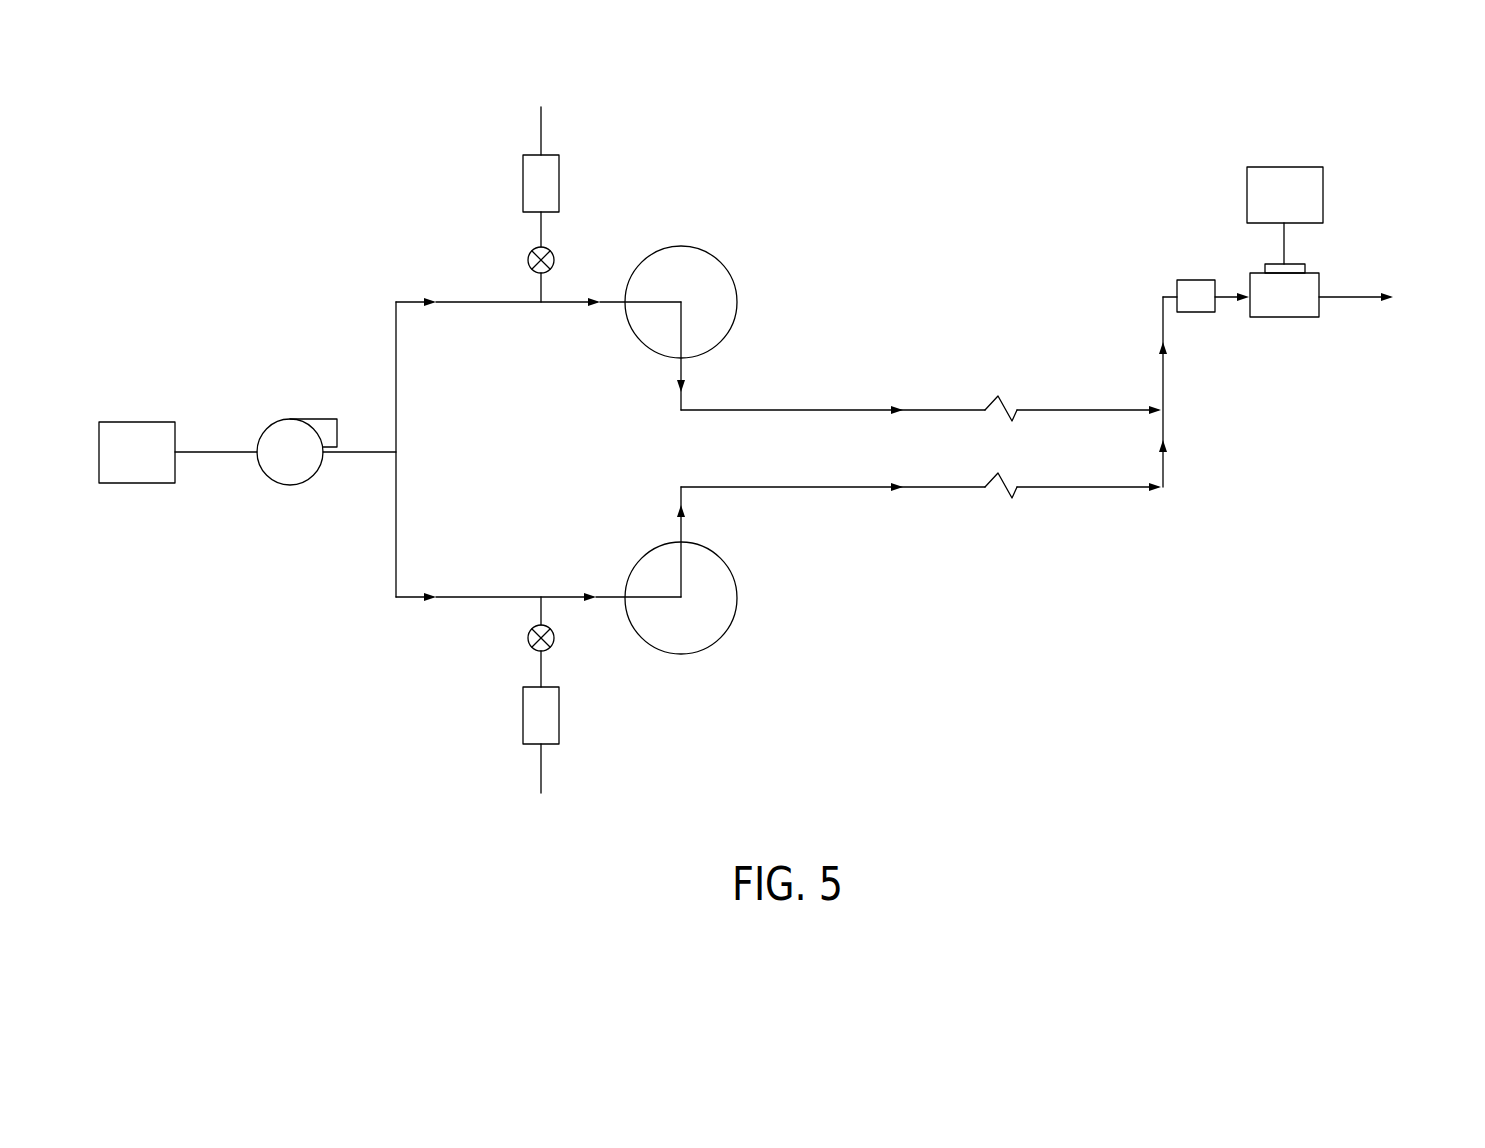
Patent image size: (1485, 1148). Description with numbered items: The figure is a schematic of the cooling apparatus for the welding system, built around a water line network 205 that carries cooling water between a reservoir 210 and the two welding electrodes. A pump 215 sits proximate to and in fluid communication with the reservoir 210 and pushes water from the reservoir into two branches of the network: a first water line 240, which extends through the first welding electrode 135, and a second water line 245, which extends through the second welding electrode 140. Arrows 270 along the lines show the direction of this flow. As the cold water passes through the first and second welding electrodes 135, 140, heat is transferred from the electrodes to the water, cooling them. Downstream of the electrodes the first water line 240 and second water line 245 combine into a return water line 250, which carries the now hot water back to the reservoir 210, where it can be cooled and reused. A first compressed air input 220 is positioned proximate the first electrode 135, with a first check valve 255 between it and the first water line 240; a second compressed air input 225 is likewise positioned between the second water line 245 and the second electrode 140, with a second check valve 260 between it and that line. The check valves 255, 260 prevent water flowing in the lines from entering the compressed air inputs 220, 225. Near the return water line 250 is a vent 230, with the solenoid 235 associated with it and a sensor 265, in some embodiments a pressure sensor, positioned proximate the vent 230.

The first welding electrode 135 is at (708, 644).
The second welding electrode 140 is at (712, 252).
The water line network 205 is at (217, 453).
The reservoir 210 is at (137, 452).
The pump 215 is at (300, 419).
The first compressed air input 220 is at (560, 718).
The second compressed air input 225 is at (560, 180).
The vent 230 is at (1290, 318).
The solenoid 235 is at (1280, 167).
The first water line 240 is at (560, 595).
The second water line 245 is at (562, 304).
The return water line 250 is at (1163, 400).
The first check valve 255 is at (530, 642).
The second check valve 260 is at (528, 257).
The sensor 265 is at (1195, 280).
The arrows 270 is at (440, 304).